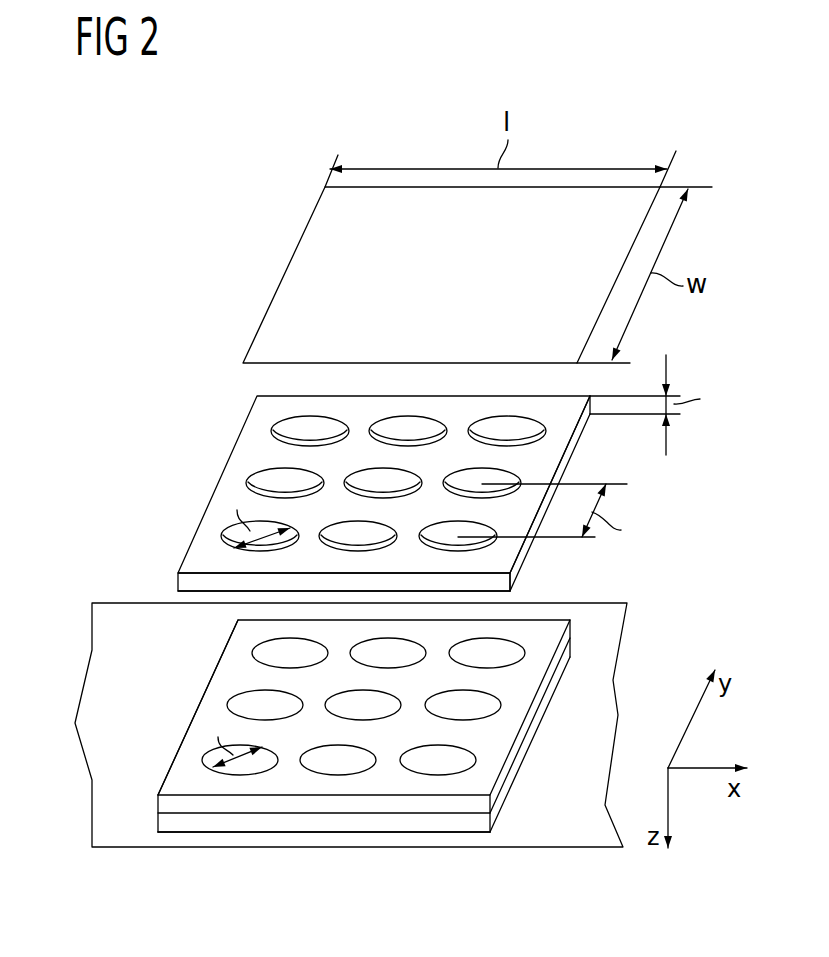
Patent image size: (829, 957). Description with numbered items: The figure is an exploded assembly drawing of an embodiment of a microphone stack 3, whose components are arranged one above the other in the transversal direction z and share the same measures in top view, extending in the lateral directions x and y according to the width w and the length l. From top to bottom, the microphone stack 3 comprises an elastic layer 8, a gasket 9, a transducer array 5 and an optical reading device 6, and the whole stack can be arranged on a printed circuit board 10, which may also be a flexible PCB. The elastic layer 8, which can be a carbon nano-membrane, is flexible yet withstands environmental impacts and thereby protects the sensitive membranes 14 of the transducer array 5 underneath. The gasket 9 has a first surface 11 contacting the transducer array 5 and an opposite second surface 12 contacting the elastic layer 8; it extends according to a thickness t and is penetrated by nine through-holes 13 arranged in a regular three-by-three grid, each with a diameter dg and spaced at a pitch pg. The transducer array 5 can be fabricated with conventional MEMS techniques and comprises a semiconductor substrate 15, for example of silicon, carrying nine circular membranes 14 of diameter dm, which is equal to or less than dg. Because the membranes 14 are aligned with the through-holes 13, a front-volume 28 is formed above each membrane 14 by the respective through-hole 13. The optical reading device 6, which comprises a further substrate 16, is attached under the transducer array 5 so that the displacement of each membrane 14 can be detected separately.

The microphone stack 3 is at (668, 108).
The elastic layer 8 is at (287, 292).
The gasket 9 is at (198, 552).
The second surface 12 is at (569, 462).
The first surface 11 is at (498, 602).
The through-holes 13 is at (341, 469).
The front-volume 28 is at (300, 425).
The printed circuit board 10 is at (132, 615).
The transducer array 5 is at (240, 676).
The membranes 14 is at (463, 711).
The semiconductor substrate 15 is at (182, 770).
The optical reading device 6 is at (170, 826).
The further substrate 16 is at (323, 820).